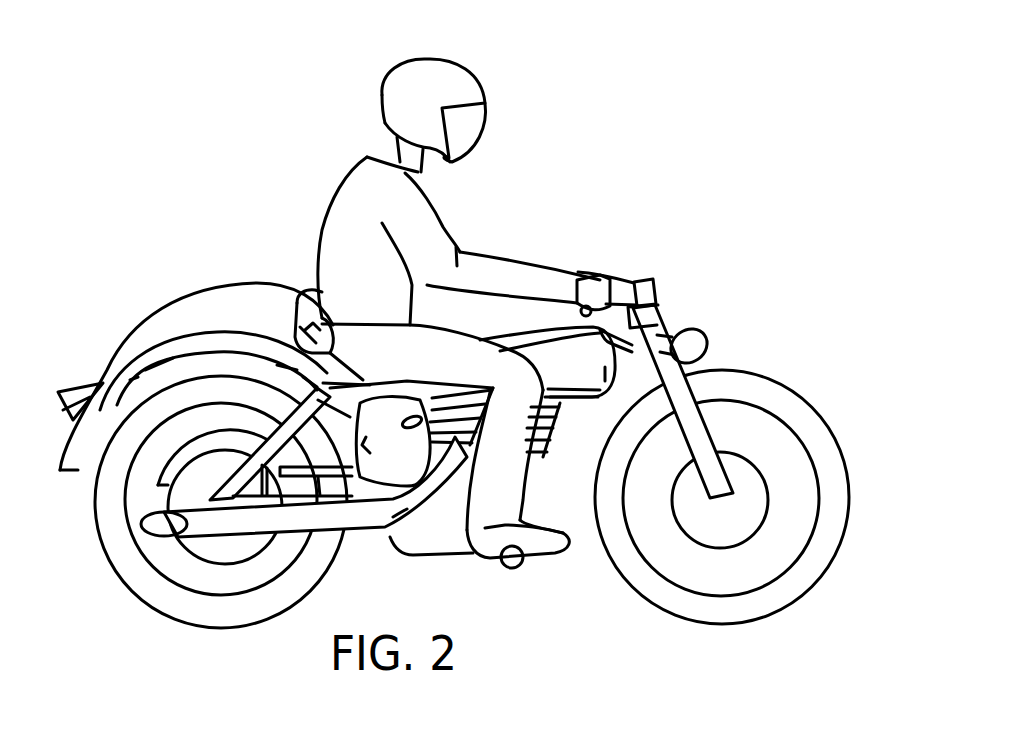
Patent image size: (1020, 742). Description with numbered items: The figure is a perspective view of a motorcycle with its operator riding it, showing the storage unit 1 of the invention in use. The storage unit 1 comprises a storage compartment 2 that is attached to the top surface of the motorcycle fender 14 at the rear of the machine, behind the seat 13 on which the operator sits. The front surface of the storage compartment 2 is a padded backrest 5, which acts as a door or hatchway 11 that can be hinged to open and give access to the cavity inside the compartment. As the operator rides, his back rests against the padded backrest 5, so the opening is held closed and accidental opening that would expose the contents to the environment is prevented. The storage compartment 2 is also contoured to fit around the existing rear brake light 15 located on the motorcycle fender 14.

The storage unit 1 is at (168, 328).
The storage compartment 2 is at (212, 307).
The padded backrest 5 is at (313, 323).
The door or hatchway 11 is at (297, 314).
The seat 13 is at (352, 383).
The motorcycle fender 14 is at (79, 455).
The rear brake light 15 is at (76, 403).